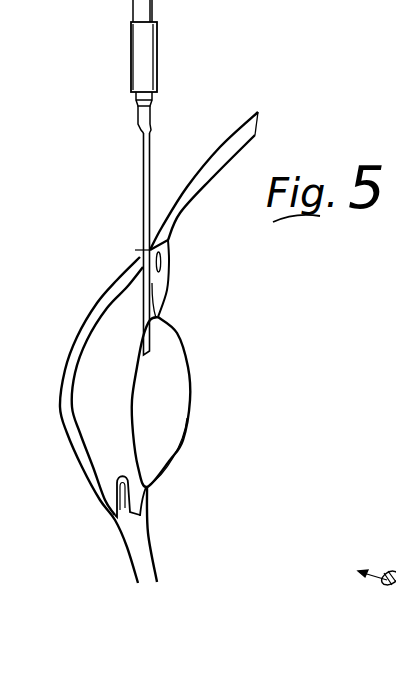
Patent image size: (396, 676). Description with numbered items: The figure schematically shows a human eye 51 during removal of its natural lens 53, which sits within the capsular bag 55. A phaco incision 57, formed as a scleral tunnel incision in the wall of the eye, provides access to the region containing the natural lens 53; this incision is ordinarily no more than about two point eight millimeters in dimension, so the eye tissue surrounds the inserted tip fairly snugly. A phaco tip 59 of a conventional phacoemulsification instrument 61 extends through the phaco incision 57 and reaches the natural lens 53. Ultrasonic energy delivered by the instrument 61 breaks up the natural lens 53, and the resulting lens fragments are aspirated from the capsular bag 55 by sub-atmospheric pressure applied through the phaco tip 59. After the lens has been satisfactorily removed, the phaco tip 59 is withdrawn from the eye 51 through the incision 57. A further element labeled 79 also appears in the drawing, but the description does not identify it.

The human eye 51 is at (77, 313).
The natural lens 53 is at (180, 357).
The capsular bag 55 is at (177, 458).
The phaco incision 57 is at (139, 253).
The phaco tip 59 is at (150, 150).
The phacoemulsification instrument 61 is at (157, 53).
The eye 79 is at (380, 567).